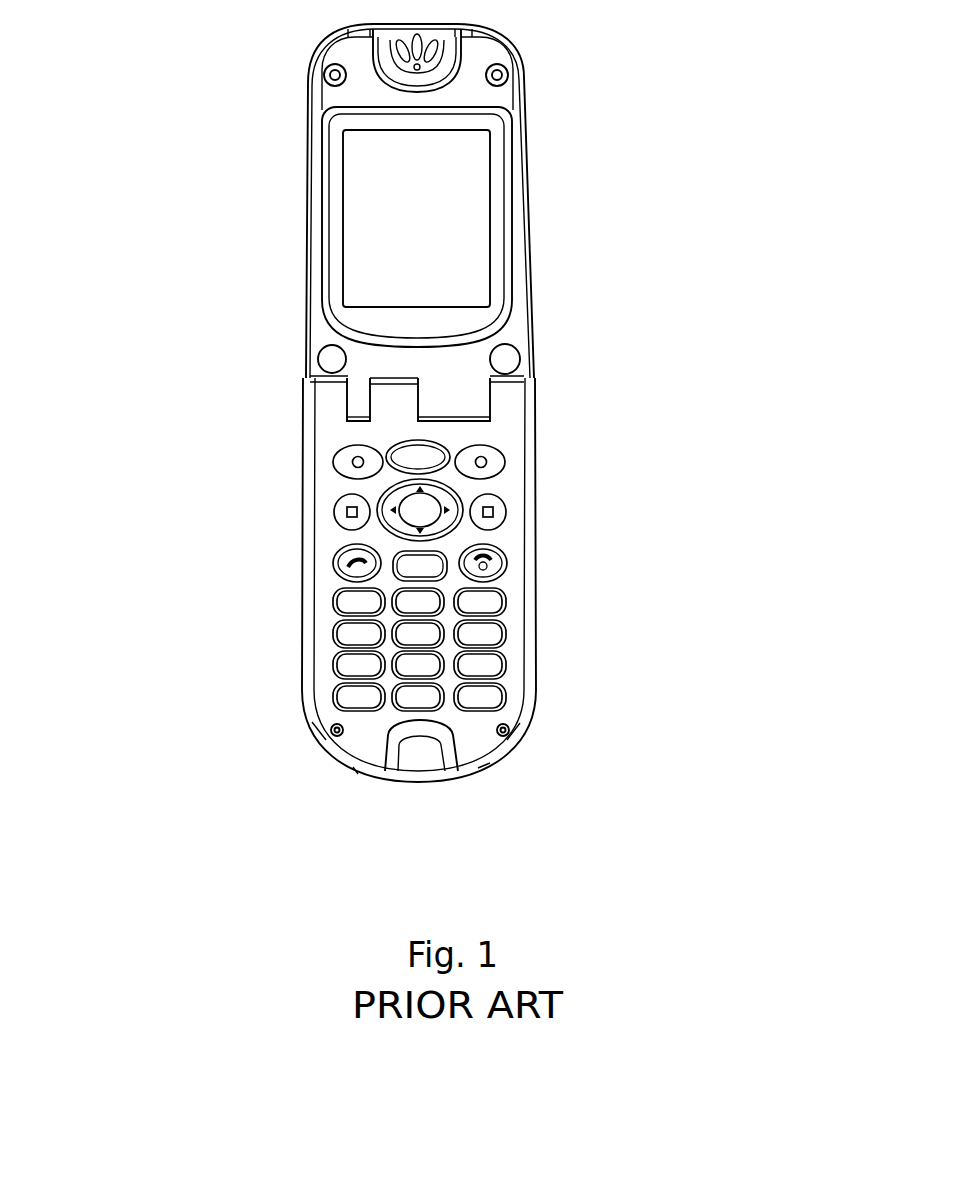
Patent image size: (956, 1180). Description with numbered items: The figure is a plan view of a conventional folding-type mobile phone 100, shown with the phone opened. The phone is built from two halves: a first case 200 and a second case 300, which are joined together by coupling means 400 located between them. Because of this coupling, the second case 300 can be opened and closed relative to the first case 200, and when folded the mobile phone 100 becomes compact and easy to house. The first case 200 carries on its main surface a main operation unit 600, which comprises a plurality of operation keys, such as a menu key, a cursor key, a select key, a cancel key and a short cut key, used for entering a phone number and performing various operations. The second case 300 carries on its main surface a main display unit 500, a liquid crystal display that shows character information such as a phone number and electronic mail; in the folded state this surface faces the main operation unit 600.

The mobile phone 100 is at (453, 430).
The first case 200 is at (327, 707).
The second case 300 is at (507, 95).
The coupling means 400 is at (313, 400).
The main display unit 500 is at (473, 272).
The main operation unit 600 is at (601, 553).